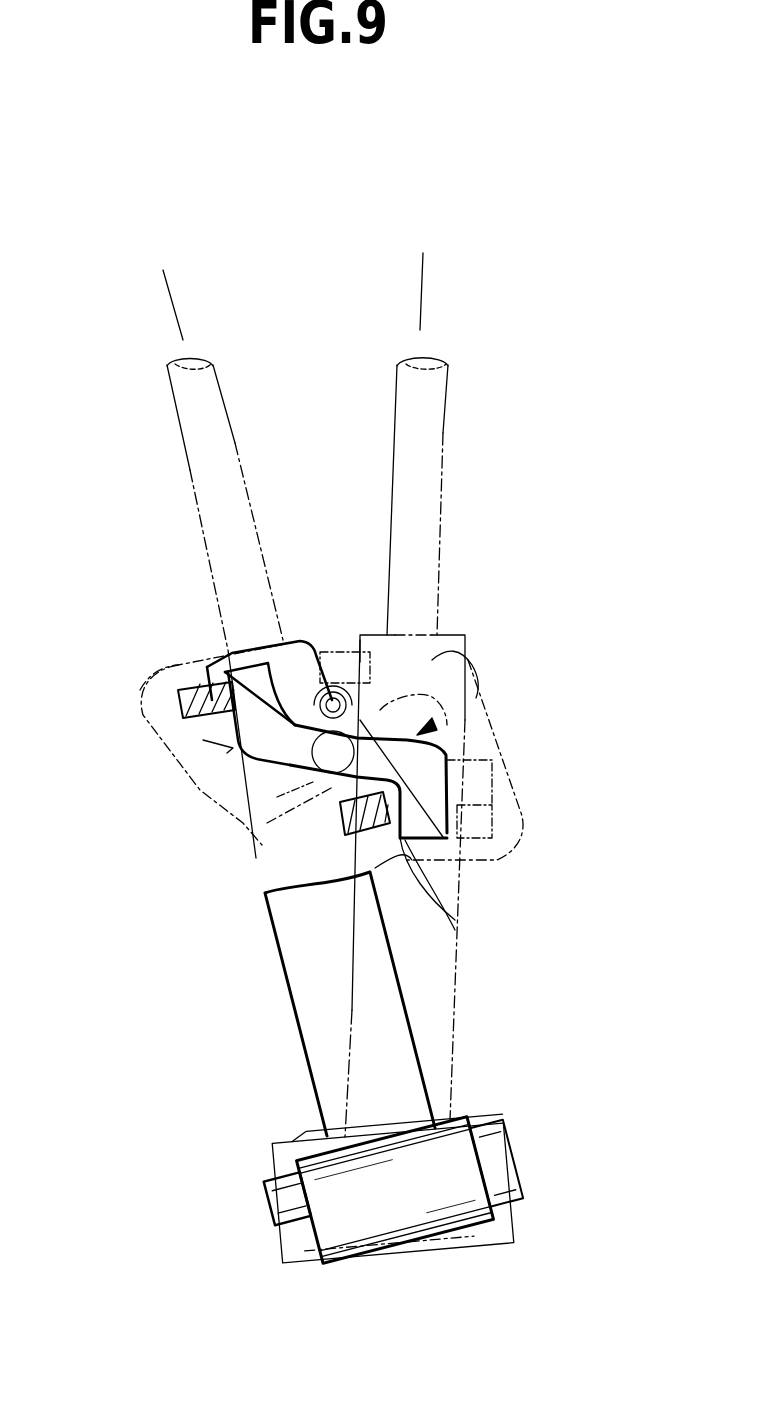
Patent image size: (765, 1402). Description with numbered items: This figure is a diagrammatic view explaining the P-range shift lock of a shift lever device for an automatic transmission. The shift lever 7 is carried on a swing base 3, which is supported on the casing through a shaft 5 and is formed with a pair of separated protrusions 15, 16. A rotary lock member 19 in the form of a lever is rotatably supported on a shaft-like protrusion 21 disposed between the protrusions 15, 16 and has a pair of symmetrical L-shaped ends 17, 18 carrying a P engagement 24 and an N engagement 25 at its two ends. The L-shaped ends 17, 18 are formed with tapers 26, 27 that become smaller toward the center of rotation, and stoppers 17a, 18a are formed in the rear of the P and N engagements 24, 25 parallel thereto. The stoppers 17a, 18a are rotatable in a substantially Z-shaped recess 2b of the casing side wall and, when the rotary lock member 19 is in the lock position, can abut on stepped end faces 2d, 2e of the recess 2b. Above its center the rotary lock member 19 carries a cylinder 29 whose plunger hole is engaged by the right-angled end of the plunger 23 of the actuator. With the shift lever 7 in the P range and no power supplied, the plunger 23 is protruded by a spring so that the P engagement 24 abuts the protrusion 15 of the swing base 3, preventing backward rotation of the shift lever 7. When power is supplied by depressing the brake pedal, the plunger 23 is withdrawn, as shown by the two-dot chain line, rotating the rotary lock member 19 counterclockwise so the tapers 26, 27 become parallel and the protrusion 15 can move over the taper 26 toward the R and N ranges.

The shift lever 7 is at (407, 458).
The swing base 3 is at (355, 1018).
The shaft 5 is at (403, 1212).
The recess 2b is at (490, 750).
The stepped end face 2d is at (322, 675).
The stepped end face 2e is at (370, 850).
The protrusion 15 is at (177, 700).
The protrusion 16 is at (343, 812).
The L-shaped end 17 is at (232, 660).
The stopper 17a is at (300, 680).
The L-shaped end 18 is at (397, 850).
The stopper 18a is at (375, 868).
The rotary lock member 19 is at (422, 730).
The shaft-like protrusion 21 is at (325, 772).
The plunger 23 is at (303, 748).
The P engagement 24 is at (232, 715).
The N engagement 25 is at (455, 825).
The taper 26 is at (278, 680).
The taper 27 is at (440, 845).
The cylinder 29 is at (348, 712).